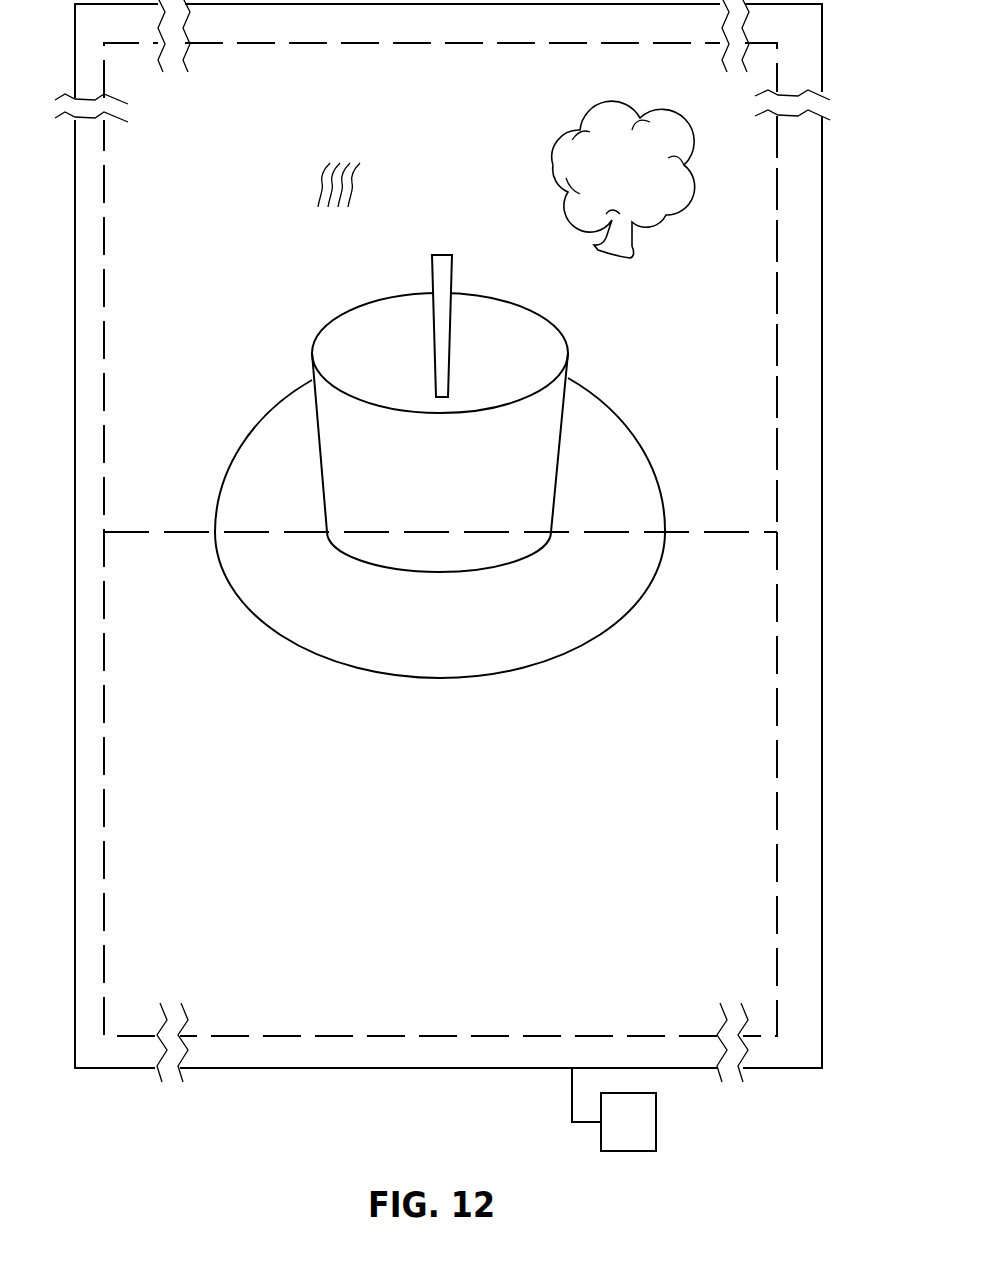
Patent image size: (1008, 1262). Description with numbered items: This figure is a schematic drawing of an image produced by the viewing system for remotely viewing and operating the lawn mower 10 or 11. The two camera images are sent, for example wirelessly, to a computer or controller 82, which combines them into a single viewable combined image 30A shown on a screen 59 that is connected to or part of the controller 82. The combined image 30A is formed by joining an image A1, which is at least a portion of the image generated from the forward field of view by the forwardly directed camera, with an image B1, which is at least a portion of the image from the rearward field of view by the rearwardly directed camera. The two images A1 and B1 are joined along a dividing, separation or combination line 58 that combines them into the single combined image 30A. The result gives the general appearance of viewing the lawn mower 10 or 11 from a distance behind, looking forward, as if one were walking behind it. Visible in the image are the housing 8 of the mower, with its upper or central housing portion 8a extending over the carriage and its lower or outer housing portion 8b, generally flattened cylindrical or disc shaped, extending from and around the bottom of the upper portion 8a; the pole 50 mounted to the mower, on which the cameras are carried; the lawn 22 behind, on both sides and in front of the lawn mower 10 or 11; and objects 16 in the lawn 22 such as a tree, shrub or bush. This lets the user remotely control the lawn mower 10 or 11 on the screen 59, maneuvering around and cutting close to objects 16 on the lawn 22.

The housing 8 is at (470, 434).
The upper or central housing portion 8a is at (498, 305).
The lower or outer housing portion 8b is at (635, 475).
The lawn mower 10 is at (640, 314).
The lawn mower 11 is at (594, 339).
The object 16 is at (590, 105).
The lawn 22 is at (312, 186).
The combined image 30A is at (777, 225).
The pole 50 is at (443, 254).
The combination line 58 is at (723, 540).
The screen 59 is at (823, 650).
The controller 82 is at (656, 1126).
The image A1 is at (777, 402).
The image B1 is at (778, 835).